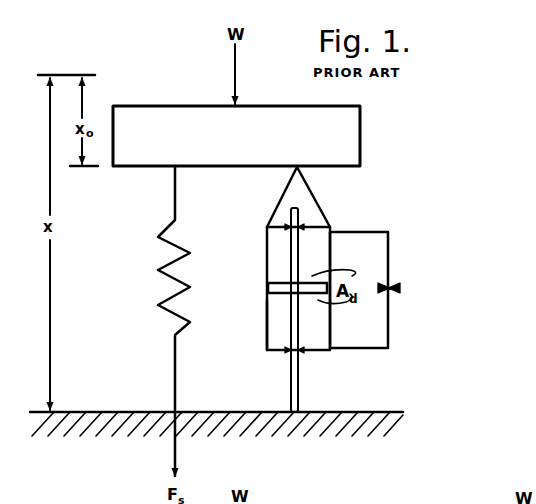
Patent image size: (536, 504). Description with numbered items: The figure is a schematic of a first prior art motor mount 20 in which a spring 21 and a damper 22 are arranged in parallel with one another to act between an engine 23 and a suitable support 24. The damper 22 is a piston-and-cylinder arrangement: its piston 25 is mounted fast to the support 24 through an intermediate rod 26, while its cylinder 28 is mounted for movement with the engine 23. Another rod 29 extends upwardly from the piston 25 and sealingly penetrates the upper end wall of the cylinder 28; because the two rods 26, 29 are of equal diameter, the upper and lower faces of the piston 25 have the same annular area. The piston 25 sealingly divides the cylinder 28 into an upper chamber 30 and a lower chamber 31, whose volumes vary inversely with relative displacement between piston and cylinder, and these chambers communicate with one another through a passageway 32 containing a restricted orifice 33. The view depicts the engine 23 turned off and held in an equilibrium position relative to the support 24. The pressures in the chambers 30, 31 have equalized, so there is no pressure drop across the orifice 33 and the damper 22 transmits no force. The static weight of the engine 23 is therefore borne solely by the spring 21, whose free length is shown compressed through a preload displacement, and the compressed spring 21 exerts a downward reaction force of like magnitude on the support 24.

The prior art motor mount 20 is at (425, 163).
The spring 21 is at (160, 274).
The damper 22 is at (258, 236).
The engine 23 is at (172, 114).
The support 24 is at (247, 420).
The piston 25 is at (268, 289).
The rod 26 is at (300, 386).
The cylinder 28 is at (267, 323).
The rod 29 is at (303, 214).
The upper chamber 30 is at (322, 260).
The lower chamber 31 is at (322, 335).
The passageway 32 is at (389, 249).
The orifice 33 is at (400, 288).